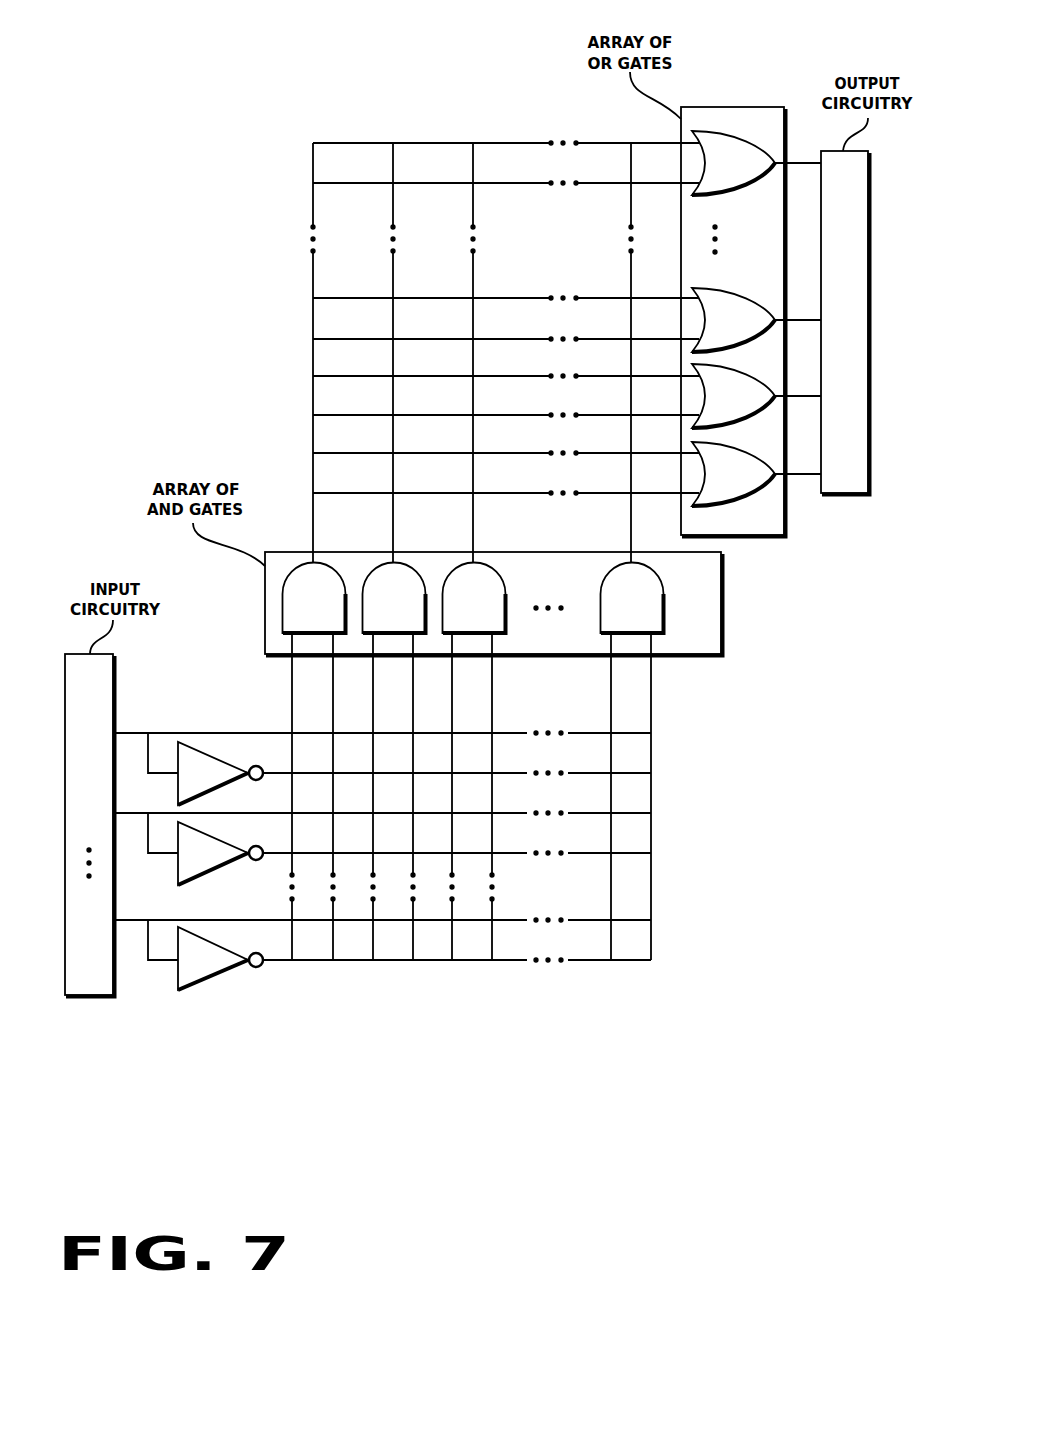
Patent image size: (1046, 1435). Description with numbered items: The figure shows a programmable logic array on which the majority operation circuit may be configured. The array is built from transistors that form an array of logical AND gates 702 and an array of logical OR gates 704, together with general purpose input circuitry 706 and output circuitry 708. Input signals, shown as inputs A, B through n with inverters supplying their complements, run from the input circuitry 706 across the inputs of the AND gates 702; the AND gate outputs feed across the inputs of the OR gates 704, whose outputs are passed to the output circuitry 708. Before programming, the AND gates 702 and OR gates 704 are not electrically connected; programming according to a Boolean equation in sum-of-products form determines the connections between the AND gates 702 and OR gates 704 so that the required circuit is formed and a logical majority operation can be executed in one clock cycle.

The array of AND gates 702 is at (684, 649).
The array of OR gates 704 is at (748, 529).
The input circuitry 706 is at (75, 988).
The output circuitry 708 is at (830, 485).